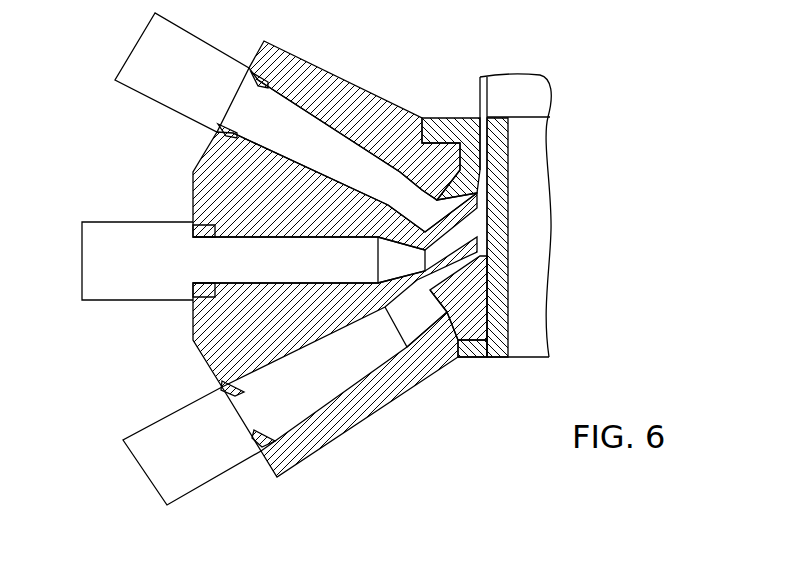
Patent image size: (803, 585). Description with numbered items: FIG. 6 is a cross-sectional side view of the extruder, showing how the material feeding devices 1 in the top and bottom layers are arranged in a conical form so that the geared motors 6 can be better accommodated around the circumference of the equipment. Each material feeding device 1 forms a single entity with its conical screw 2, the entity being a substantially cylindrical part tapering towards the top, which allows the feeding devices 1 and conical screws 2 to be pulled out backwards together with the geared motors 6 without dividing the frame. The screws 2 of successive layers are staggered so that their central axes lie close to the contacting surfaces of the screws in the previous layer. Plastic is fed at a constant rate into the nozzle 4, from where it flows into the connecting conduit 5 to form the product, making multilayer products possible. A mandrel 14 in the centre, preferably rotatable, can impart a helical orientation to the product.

The material feeding device 1 is at (323, 150).
The conical screw 2 is at (407, 202).
The nozzle 4 is at (460, 195).
The connecting conduit 5 is at (483, 150).
The geared motor 6 is at (185, 67).
The mandrel 14 is at (503, 358).